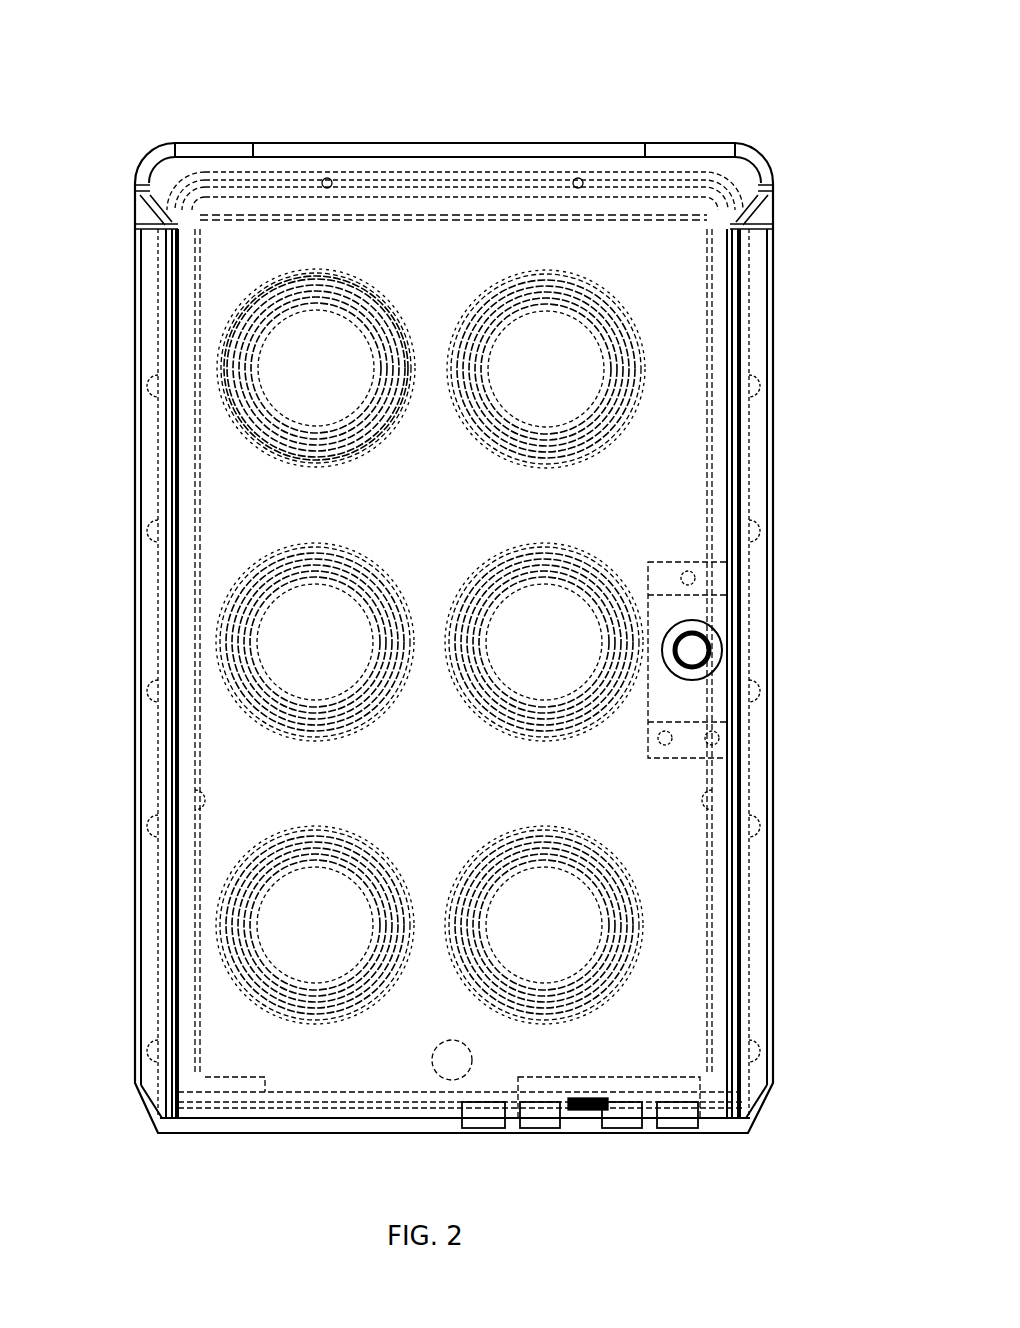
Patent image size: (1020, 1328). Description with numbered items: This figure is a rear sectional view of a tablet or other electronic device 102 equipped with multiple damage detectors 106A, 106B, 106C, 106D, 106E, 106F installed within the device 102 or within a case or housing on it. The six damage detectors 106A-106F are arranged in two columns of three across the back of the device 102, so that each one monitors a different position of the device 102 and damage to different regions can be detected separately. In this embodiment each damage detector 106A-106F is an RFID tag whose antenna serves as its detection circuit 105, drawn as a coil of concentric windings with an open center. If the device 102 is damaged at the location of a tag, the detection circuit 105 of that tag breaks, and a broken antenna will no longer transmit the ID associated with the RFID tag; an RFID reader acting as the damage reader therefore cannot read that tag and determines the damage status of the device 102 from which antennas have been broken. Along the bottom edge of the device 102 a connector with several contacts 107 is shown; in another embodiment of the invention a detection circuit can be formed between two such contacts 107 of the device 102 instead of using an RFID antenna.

The electronic device 102 is at (753, 314).
The detection circuit 105 is at (227, 330).
The damage detector 106A is at (322, 278).
The damage detector 106B is at (575, 278).
The damage detector 106C is at (262, 568).
The damage detector 106D is at (588, 555).
The damage detector 106E is at (225, 942).
The damage detector 106F is at (612, 958).
The contacts 107 is at (542, 1133).